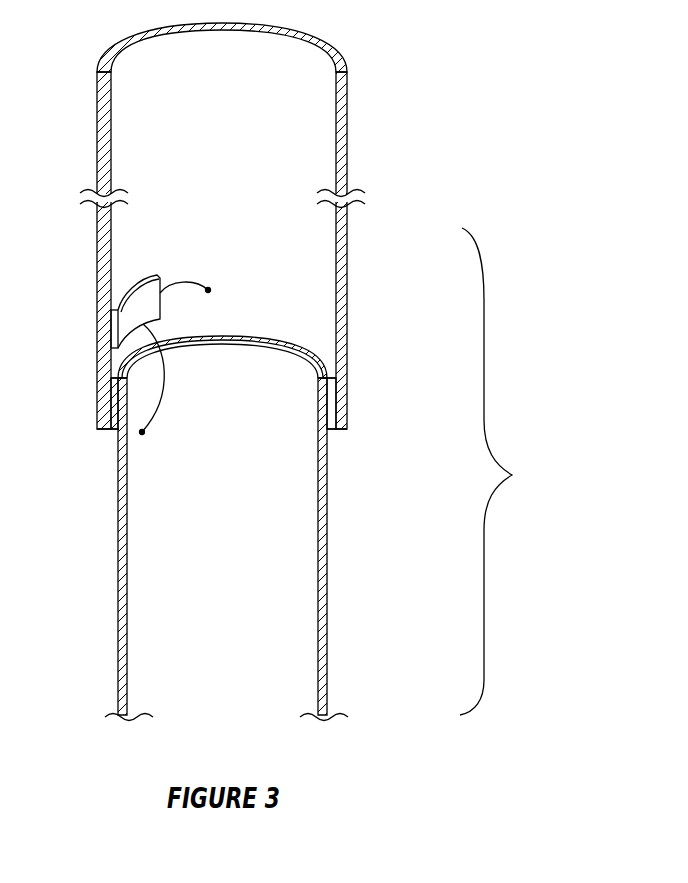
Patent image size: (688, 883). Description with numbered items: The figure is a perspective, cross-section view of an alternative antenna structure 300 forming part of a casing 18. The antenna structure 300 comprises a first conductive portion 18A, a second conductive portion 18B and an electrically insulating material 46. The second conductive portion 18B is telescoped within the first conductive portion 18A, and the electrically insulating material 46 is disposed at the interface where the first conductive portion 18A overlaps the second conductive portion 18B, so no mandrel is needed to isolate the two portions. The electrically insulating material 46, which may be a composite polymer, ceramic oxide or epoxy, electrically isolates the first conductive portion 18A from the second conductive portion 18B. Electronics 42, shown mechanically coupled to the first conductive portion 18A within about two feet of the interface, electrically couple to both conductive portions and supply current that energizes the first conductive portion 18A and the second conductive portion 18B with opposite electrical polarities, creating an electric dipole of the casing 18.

The casing 18 is at (261, 372).
The first conductive portion 18A is at (348, 320).
The second conductive portion 18B is at (327, 552).
The electronics 42 is at (150, 277).
The electrically insulating material 46 is at (257, 336).
The antenna structure 300 is at (508, 471).